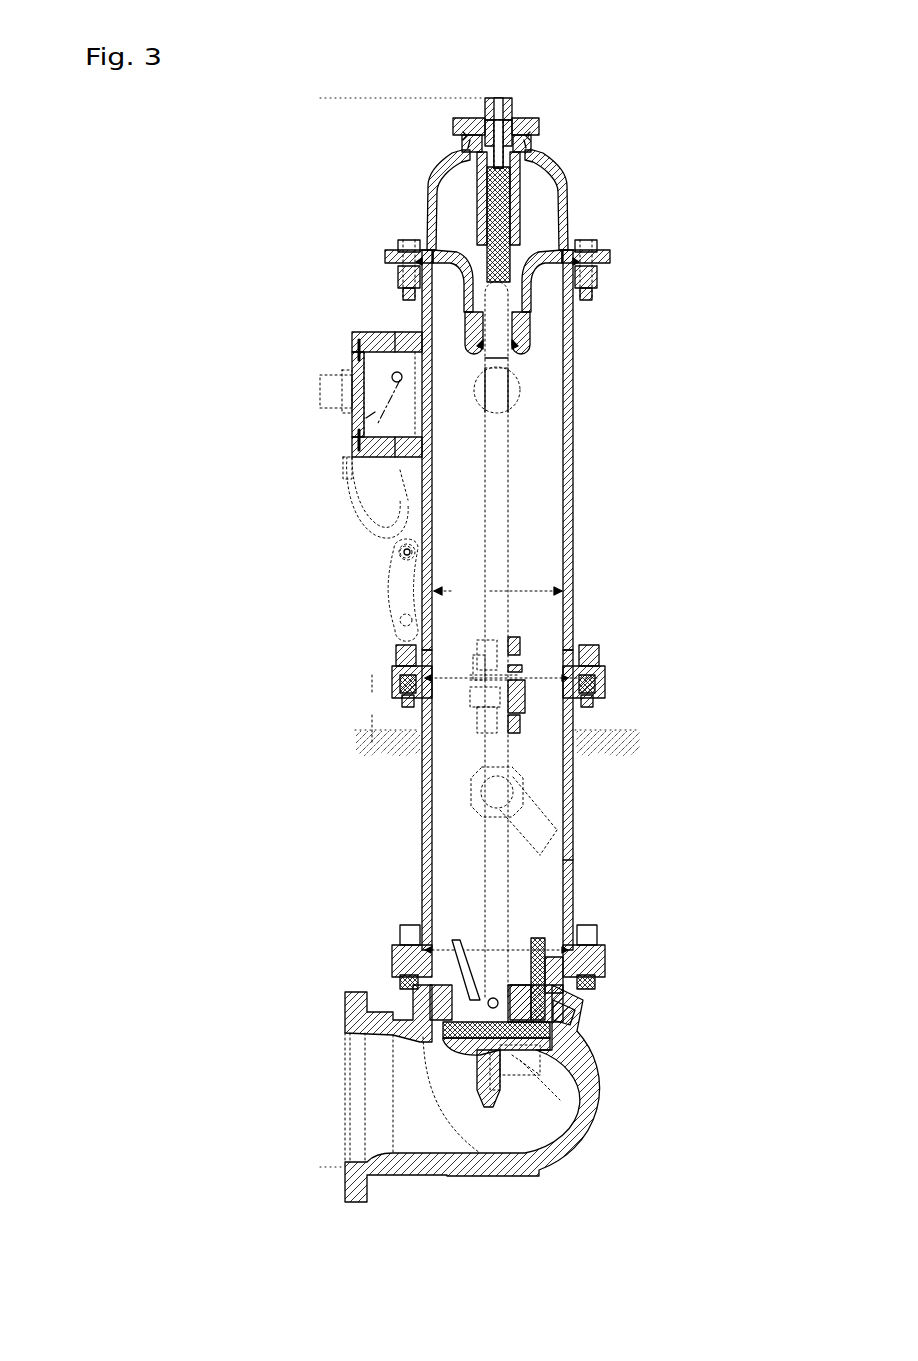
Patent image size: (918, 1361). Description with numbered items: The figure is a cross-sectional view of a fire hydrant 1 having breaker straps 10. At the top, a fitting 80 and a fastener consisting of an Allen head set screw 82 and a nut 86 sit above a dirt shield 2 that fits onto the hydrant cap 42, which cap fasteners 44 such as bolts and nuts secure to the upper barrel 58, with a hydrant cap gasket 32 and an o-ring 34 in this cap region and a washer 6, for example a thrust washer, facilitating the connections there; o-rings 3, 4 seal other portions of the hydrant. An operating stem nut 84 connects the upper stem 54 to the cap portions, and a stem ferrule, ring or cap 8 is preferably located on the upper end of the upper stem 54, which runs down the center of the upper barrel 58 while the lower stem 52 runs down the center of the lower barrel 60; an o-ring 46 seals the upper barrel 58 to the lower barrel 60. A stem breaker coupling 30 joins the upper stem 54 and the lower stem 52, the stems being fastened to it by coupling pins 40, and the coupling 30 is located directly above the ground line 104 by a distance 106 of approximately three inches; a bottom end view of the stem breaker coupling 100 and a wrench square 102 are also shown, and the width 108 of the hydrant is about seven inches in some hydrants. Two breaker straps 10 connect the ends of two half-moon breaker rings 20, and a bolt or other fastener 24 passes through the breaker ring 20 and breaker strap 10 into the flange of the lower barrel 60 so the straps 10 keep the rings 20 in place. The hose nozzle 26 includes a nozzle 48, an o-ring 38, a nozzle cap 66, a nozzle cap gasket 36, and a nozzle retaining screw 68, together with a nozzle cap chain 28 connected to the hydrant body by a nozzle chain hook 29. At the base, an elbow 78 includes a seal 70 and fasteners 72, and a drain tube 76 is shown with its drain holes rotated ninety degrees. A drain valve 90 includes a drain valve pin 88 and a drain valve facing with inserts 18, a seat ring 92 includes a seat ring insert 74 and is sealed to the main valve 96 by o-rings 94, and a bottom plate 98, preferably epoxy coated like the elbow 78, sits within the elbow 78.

The fire hydrant 1 is at (693, 68).
The dirt shield 2 is at (540, 118).
The o-ring 3 is at (514, 358).
The o-ring 4 is at (527, 148).
The washer 6 is at (546, 163).
The stem ferrule, ring or cap 8 is at (512, 313).
The breaker strap 10 is at (394, 645).
The drain valve facing with inserts 18 is at (551, 960).
The breaker ring 20 is at (605, 658).
The bolt or other fastener 24 is at (590, 646).
The hose nozzle 26 is at (372, 417).
The nozzle cap chain 28 is at (404, 478).
The nozzle chain hook 29 is at (395, 500).
The stem breaker coupling 30 is at (515, 648).
The hydrant cap gasket 32 is at (588, 265).
The o-ring 34 is at (512, 350).
The nozzle cap gasket 36 is at (322, 383).
The o-ring 38 is at (390, 332).
The coupling pin 40 is at (548, 700).
The hydrant cap 42 is at (562, 192).
The cap fastener 44 is at (583, 248).
The o-ring 46 is at (522, 664).
The nozzle 48 is at (345, 422).
The lower stem 52 is at (515, 858).
The upper stem 54 is at (510, 563).
The upper barrel 58 is at (574, 573).
The lower barrel 60 is at (574, 864).
The nozzle cap 66 is at (352, 338).
The nozzle retaining screw 68 is at (350, 470).
The seal 70 is at (570, 962).
The fastener 72 is at (587, 940).
The seat ring insert 74 is at (560, 1015).
The drain tube 76 is at (556, 1022).
The elbow 78 is at (586, 1105).
The fitting 80 is at (495, 106).
The Allen head set screw 82 is at (457, 132).
The operating stem nut 84 is at (513, 103).
The nut 86 is at (534, 140).
The drain valve pin 88 is at (545, 1060).
The drain valve 90 is at (540, 940).
The seat ring 92 is at (575, 1020).
The o-ring 94 is at (560, 1035).
The main valve 96 is at (545, 1045).
The bottom plate 98 is at (530, 1050).
The stem breaker coupling bottom end view 100 is at (490, 800).
The wrench square 102 is at (510, 808).
The ground line 104 is at (337, 745).
The distance 106 is at (374, 708).
The width 108 is at (498, 592).